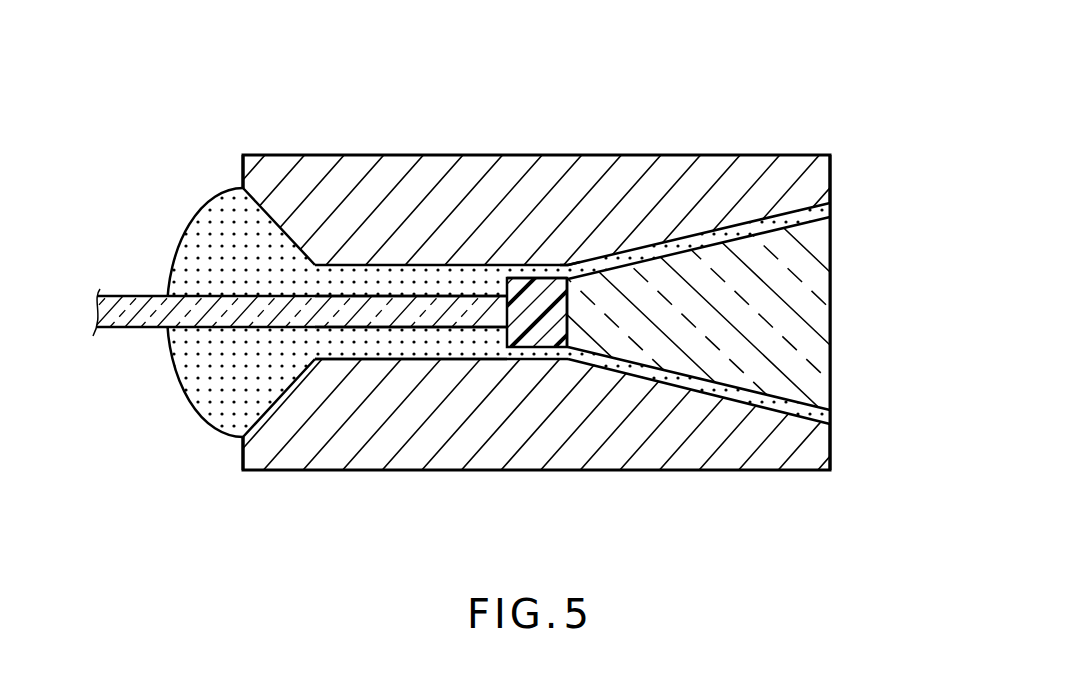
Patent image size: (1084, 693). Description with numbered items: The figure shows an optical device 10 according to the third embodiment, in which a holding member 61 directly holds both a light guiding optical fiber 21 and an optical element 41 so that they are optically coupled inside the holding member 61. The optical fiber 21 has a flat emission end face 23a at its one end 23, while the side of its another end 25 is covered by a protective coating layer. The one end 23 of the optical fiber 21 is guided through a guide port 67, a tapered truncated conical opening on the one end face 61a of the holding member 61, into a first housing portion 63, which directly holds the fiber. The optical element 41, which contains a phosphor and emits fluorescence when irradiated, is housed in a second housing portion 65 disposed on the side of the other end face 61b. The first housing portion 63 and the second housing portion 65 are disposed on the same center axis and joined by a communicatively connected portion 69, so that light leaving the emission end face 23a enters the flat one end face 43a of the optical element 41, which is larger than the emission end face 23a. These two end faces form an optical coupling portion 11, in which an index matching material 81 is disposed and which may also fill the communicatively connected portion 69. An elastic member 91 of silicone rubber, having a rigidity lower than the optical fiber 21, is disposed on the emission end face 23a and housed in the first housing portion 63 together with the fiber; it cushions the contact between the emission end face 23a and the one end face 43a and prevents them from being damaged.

The optical device 10 is at (542, 312).
The optical coupling portion 11 is at (536, 427).
The optical fiber 21 is at (271, 326).
The one end 23 is at (446, 318).
The emission end face 23a is at (507, 313).
The another end 25 is at (124, 295).
The optical element 41 is at (746, 364).
The one end face 43a is at (567, 322).
The holding member 61 is at (634, 210).
The one end face 61a is at (243, 168).
The another end face 61b is at (830, 180).
The first housing portion 63 is at (393, 264).
The second housing portion 65 is at (748, 222).
The guide port 67 is at (298, 238).
The communicatively connected portion 69 is at (563, 254).
The index matching material 81 is at (207, 393).
The elastic member 91 is at (523, 277).